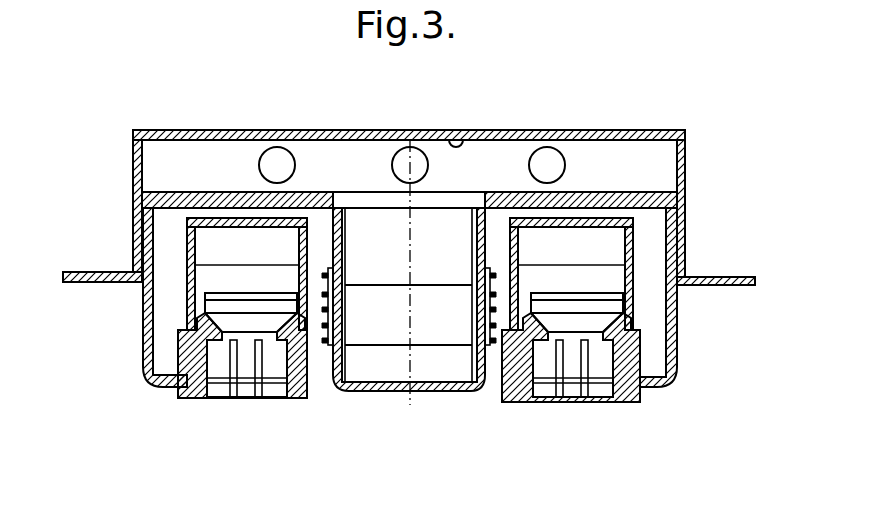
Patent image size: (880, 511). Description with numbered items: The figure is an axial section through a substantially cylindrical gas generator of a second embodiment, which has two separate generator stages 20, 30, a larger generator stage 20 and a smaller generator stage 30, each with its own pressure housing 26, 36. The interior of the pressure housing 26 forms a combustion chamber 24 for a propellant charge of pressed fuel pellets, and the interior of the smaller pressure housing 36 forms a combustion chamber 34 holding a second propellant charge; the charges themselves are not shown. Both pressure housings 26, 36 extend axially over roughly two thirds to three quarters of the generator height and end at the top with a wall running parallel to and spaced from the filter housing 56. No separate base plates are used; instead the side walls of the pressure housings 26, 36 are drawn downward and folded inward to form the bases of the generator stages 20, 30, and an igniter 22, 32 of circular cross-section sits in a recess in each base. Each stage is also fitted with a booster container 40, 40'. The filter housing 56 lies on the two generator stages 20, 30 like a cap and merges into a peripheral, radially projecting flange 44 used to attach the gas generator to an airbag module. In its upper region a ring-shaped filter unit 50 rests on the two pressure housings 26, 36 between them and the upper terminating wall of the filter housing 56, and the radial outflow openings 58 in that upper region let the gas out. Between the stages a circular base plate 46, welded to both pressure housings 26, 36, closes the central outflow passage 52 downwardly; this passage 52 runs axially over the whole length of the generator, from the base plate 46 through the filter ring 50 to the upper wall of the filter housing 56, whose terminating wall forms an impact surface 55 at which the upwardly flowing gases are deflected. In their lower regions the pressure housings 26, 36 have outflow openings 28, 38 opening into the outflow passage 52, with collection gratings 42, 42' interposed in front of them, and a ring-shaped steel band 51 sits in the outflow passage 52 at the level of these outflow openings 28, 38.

The larger generator stage 20 is at (160, 300).
The igniter 22 is at (228, 267).
The combustion chamber 24 is at (168, 340).
The pressure housing 26 is at (143, 352).
The outflow openings 28 is at (333, 313).
The smaller generator stage 30 is at (654, 303).
The igniter 32 is at (573, 315).
The combustion chamber 34 is at (675, 365).
The smaller pressure housing 36 is at (675, 337).
The outflow openings 38 is at (487, 313).
The booster container 40 is at (188, 251).
The booster container 40' is at (639, 256).
The collection grating 42 is at (289, 365).
The collection grating 42' is at (519, 366).
The flange 44 is at (747, 278).
The base plate 46 is at (425, 392).
The filter unit 50 is at (595, 165).
The steel band 51 is at (392, 325).
The outflow passage 52 is at (382, 230).
The impact surface 55 is at (458, 137).
The filter housing 56 is at (228, 130).
The radial outflow openings 58 is at (284, 163).